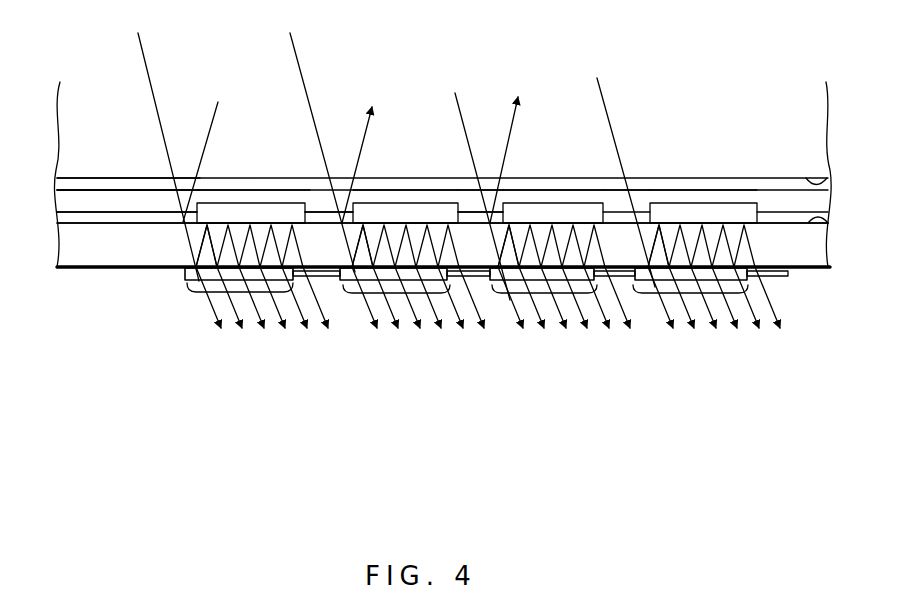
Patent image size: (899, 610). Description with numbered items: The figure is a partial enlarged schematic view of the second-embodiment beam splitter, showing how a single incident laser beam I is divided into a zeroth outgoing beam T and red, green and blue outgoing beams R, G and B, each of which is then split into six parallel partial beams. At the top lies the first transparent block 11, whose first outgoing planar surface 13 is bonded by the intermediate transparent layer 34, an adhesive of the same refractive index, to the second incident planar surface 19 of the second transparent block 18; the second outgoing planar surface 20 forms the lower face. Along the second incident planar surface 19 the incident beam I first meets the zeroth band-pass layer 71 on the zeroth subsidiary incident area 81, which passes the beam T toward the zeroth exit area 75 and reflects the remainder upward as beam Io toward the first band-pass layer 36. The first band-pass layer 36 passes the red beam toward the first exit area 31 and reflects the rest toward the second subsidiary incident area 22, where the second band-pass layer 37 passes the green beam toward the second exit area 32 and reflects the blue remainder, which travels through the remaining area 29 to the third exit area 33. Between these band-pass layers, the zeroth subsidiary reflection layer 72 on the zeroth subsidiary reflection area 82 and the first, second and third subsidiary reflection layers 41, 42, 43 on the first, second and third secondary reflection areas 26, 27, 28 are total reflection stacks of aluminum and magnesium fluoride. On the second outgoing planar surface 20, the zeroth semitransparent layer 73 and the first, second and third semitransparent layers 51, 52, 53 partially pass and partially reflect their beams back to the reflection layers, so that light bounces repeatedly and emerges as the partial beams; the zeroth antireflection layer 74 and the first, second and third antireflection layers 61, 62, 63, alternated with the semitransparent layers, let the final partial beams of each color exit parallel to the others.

The first transparent block 11 is at (80, 103).
The first outgoing planar surface 13 is at (829, 178).
The second transparent block 18 is at (74, 243).
The second incident planar surface 19 is at (829, 223).
The second outgoing planar surface 20 is at (72, 272).
The second subsidiary incident area 22 is at (477, 190).
The first secondary reflection area 26 is at (400, 190).
The second secondary reflection area 27 is at (542, 190).
The third secondary reflection area 28 is at (697, 190).
The remaining area 29 is at (610, 190).
The first exit area 31 is at (407, 281).
The second exit area 32 is at (570, 281).
The third exit area 33 is at (700, 300).
The intermediate transparent layer 34 is at (114, 194).
The first band-pass layer 36 is at (327, 190).
The second band-pass layer 37 is at (477, 208).
The first subsidiary reflection layer 41 is at (378, 205).
The second subsidiary reflection layer 42 is at (522, 203).
The third subsidiary reflection layer 43 is at (668, 203).
The first semitransparent layer 51 is at (400, 293).
The second semitransparent layer 52 is at (543, 294).
The third semitransparent layer 53 is at (697, 294).
The first antireflection layer 61 is at (478, 278).
The second antireflection layer 62 is at (622, 278).
The third antireflection layer 63 is at (775, 277).
The zeroth band-pass layer 71 is at (137, 212).
The zeroth subsidiary reflection layer 72 is at (217, 203).
The zeroth semitransparent layer 73 is at (186, 282).
The zeroth antireflection layer 74 is at (330, 278).
The zeroth exit area 75 is at (248, 293).
The zeroth subsidiary incident area 81 is at (85, 190).
The zeroth subsidiary reflection area 82 is at (247, 190).